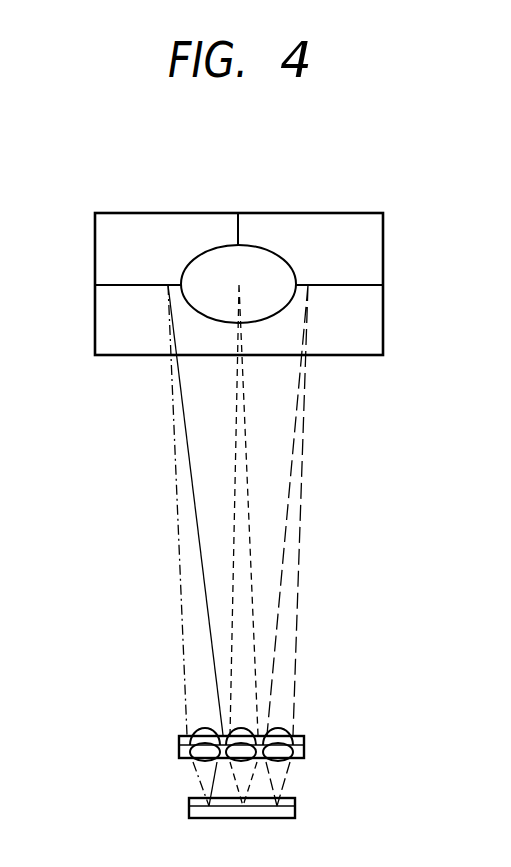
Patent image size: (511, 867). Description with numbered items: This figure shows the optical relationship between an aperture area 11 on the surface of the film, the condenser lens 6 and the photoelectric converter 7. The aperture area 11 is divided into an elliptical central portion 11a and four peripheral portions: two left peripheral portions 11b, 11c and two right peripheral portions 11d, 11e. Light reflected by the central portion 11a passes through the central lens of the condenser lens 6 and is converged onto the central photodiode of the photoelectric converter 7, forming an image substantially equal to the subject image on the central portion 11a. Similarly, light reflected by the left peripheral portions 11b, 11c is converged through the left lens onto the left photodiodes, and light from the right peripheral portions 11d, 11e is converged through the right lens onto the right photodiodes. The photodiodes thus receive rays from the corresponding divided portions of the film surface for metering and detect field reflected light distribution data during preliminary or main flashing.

The aperture area 11 is at (176, 213).
The central portion 11a is at (258, 260).
The left peripheral portion 11b is at (112, 320).
The left peripheral portion 11c is at (112, 248).
The right peripheral portion 11d is at (365, 330).
The right peripheral portion 11e is at (365, 244).
The condenser lens 6 is at (305, 748).
The photoelectric converter 7 is at (295, 808).